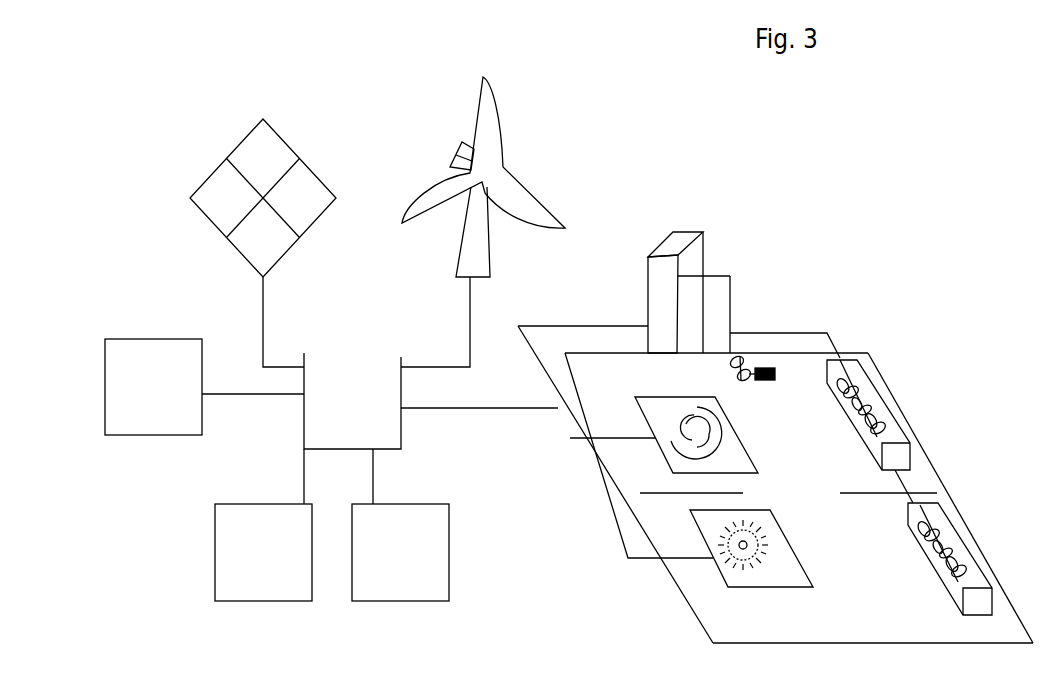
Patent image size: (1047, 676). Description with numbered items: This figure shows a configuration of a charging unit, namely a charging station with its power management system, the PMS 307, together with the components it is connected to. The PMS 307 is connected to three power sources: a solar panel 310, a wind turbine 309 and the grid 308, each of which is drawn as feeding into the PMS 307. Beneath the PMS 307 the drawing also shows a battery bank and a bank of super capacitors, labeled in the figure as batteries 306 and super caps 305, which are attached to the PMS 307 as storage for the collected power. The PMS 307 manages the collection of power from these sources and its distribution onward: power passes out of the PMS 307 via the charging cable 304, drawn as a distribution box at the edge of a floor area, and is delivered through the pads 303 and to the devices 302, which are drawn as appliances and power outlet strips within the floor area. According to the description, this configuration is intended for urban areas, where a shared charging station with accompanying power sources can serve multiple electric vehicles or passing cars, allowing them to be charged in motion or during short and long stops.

The devices 302 is at (897, 400).
The pads 303 is at (760, 588).
The charging cable 304 is at (703, 243).
The super capacitors 305 is at (449, 560).
The batteries 306 is at (215, 558).
The PMS 307 is at (386, 353).
The power source 308 is at (142, 339).
The power source 309 is at (541, 201).
The power source 310 is at (238, 147).